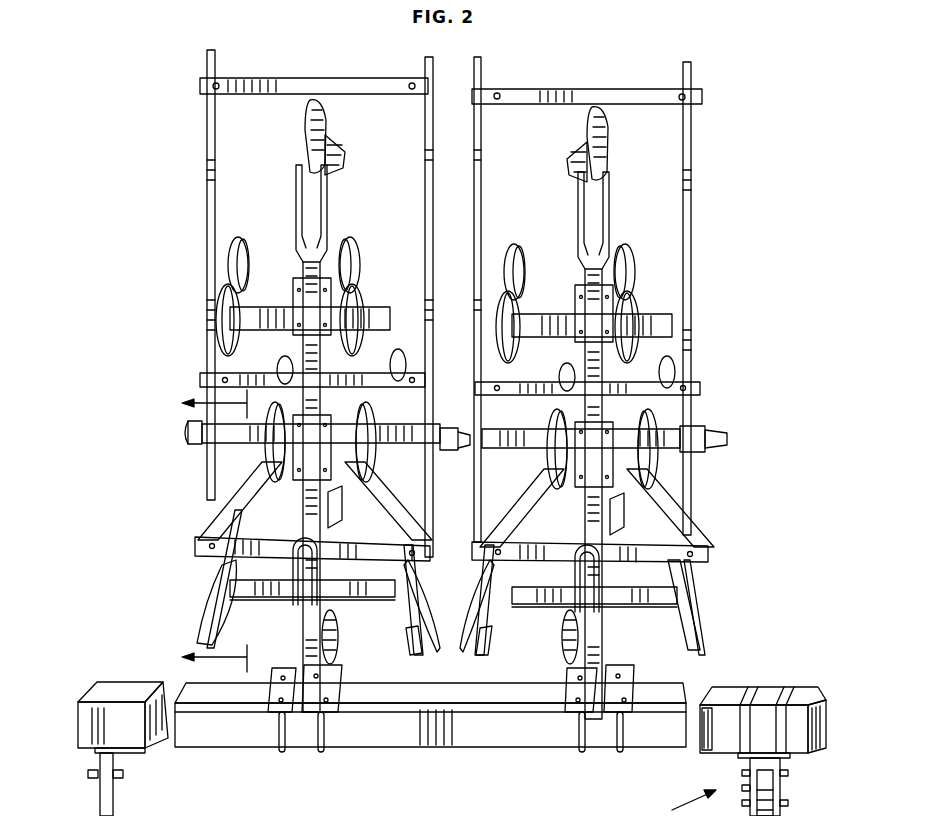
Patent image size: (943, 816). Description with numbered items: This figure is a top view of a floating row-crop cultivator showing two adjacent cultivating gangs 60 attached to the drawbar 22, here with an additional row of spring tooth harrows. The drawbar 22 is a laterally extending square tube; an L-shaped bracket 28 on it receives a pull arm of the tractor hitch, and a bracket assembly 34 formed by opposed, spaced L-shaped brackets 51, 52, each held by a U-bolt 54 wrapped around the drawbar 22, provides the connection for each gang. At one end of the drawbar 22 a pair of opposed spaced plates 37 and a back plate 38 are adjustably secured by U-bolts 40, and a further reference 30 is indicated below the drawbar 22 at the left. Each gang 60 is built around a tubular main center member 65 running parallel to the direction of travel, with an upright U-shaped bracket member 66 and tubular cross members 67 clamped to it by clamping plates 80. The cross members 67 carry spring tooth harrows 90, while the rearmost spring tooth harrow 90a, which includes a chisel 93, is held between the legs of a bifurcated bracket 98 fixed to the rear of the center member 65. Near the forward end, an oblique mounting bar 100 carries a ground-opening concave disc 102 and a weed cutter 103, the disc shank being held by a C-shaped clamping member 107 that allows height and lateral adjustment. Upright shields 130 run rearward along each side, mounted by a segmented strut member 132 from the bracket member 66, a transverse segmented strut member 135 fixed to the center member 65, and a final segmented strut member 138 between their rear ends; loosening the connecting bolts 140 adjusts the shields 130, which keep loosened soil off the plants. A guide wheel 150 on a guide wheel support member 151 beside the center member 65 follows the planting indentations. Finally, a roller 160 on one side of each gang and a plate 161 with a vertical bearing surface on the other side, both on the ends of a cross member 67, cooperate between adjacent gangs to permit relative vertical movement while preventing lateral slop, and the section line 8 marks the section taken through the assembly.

The section line 8- 8 is at (221, 533).
The drawbar 22 is at (400, 742).
The L-shaped bracket 28 is at (128, 753).
The hitch assembly 30 is at (257, 770).
The rearwardly extending bracket assembly 34 is at (556, 765).
The spaced plates 37 is at (752, 778).
The back plate 38 is at (792, 756).
The U-bolts 40 is at (790, 690).
The L-shaped bracket 51 is at (275, 695).
The L-shaped bracket 52 is at (326, 712).
The U-bolt 54 is at (583, 752).
The cultivating gang 60 is at (176, 200).
The main center member 65 is at (322, 404).
The U-shaped bracket member 66 is at (303, 535).
The cross members 67 is at (257, 318).
The clamping plates 80 is at (332, 292).
The spring tooth harrows 90 is at (238, 240).
The rearmost spring tooth harrow 90a is at (312, 127).
The chisel 93 is at (341, 152).
The bifurcated bracket 98 is at (326, 233).
The mounting bar 100 is at (228, 612).
The concave disc 102 is at (226, 598).
The weed cutter 103 is at (215, 498).
The C-shaped clamping member 107 is at (426, 652).
The upright shields 130 is at (210, 170).
The segmented strut member 132 is at (222, 546).
The segmented strut member 135 is at (225, 380).
The final segmented strut member 138 is at (291, 80).
The connecting bolts 140 is at (219, 84).
The guide wheel 150 is at (335, 668).
The guide wheel support member 151 is at (338, 540).
The roller 160 is at (443, 428).
The plate 161 is at (188, 442).